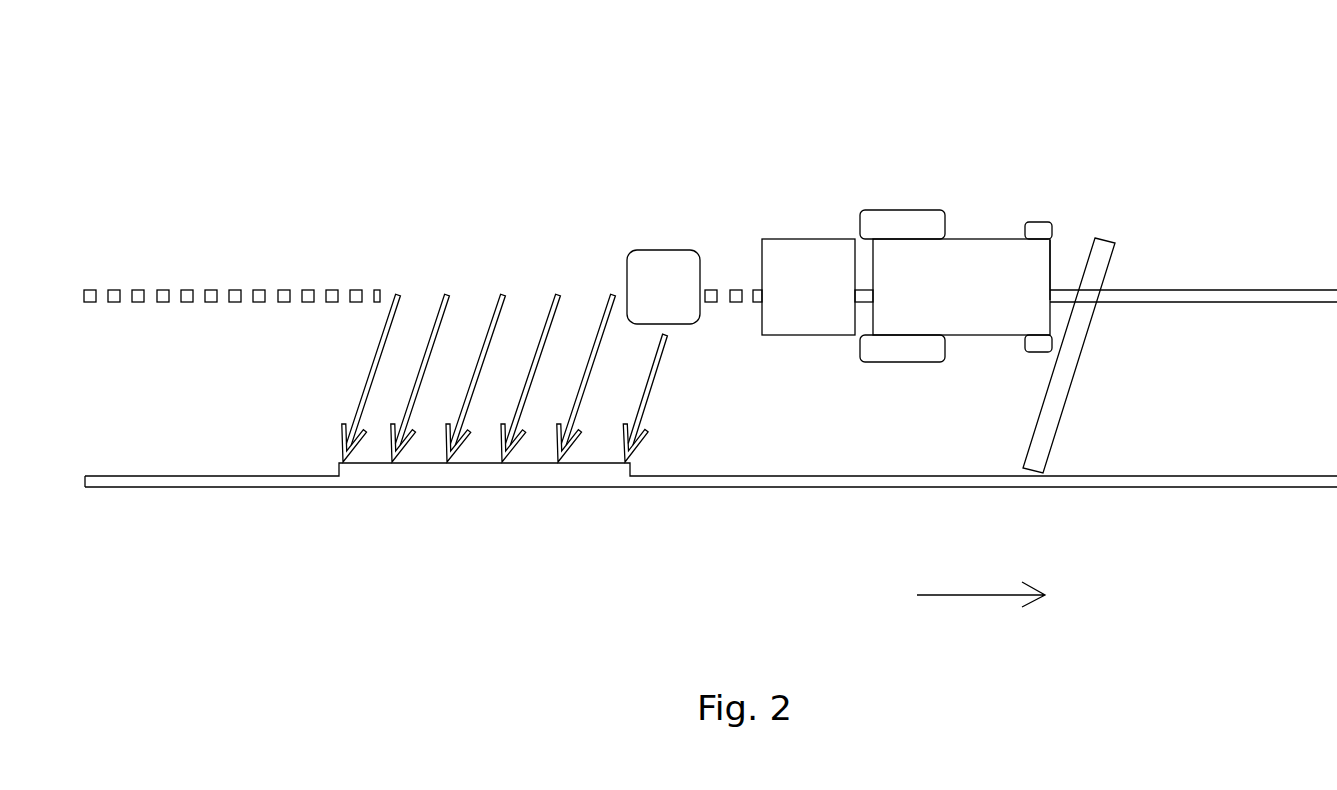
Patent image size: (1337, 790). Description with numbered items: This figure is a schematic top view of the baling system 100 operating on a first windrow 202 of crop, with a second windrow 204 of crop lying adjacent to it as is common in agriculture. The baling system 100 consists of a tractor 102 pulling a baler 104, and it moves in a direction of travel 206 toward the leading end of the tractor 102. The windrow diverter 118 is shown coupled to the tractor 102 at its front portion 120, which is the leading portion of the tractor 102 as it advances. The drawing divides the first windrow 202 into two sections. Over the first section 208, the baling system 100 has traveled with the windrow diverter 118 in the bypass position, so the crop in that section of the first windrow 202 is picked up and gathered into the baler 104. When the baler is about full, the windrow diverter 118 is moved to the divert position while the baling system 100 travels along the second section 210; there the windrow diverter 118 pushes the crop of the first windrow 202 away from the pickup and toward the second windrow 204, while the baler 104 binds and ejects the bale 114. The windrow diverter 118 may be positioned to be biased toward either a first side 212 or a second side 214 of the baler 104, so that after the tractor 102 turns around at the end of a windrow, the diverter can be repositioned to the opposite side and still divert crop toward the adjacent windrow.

The baling system 100 is at (940, 234).
The tractor 102 is at (1007, 250).
The baler 104 is at (810, 253).
The bale 114 is at (627, 271).
The windrow diverter 118 is at (1073, 362).
The front portion 120 is at (1064, 249).
The first windrow 202 is at (1292, 290).
The second windrow 204 is at (1225, 488).
The direction of travel 206 is at (980, 596).
The first section 208 is at (392, 237).
The second section 210 is at (705, 237).
The first side 212 is at (967, 235).
The second side 214 is at (972, 362).